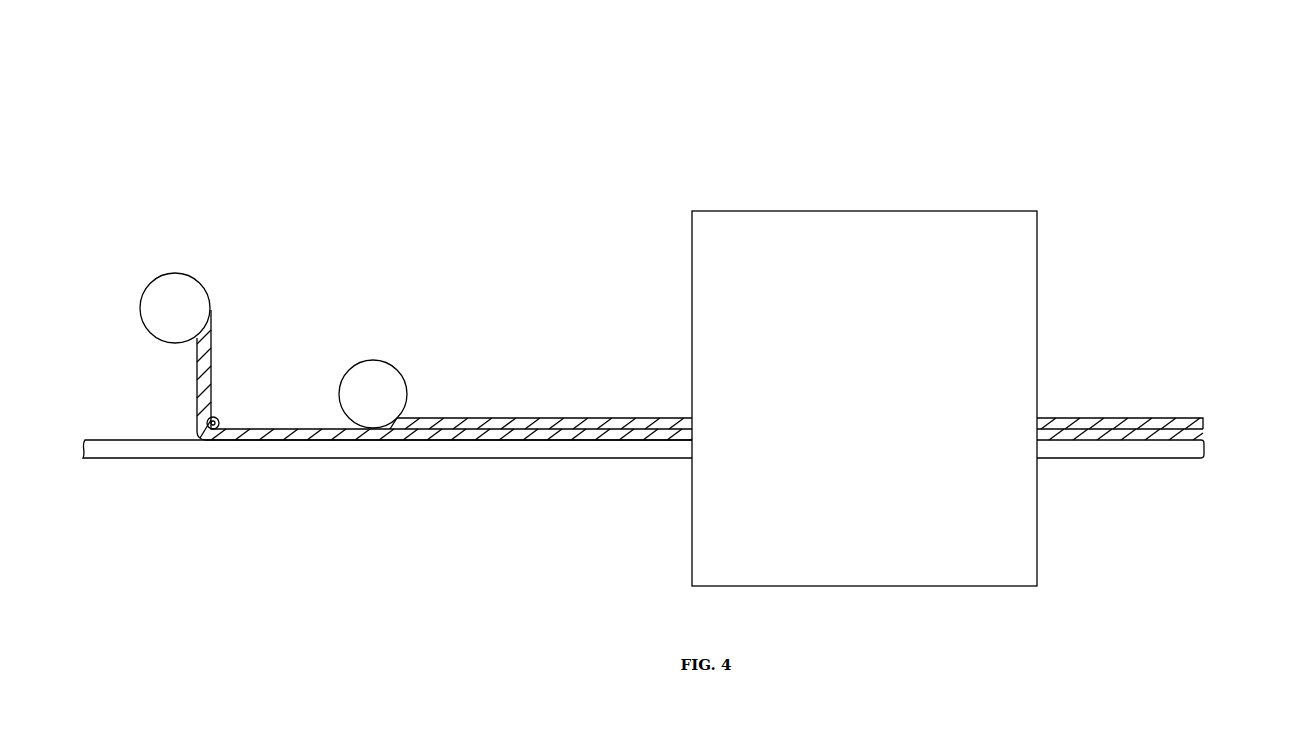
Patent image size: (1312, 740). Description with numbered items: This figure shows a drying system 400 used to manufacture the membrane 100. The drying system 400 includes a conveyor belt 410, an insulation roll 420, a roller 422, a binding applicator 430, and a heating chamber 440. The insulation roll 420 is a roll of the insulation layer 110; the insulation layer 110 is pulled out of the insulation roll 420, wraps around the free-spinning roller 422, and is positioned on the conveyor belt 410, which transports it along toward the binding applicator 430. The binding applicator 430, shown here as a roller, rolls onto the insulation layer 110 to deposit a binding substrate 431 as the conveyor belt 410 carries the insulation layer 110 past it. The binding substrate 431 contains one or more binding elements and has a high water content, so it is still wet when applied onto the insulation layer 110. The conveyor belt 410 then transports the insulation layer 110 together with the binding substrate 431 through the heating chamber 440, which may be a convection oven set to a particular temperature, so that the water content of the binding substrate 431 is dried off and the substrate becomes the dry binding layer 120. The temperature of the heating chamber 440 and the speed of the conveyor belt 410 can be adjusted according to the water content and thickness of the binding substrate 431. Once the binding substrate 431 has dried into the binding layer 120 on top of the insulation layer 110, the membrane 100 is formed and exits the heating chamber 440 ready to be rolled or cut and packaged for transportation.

The drying system 400 is at (522, 122).
The conveyor belt 410 is at (332, 452).
The insulation roll 420 is at (178, 283).
The roller 422 is at (217, 418).
The binding applicator 430 is at (373, 370).
The binding substrate 431 is at (482, 408).
The heating chamber 440 is at (865, 220).
The membrane 100 is at (1172, 410).
The insulation layer 110 is at (272, 418).
The binding layer 120 is at (1212, 418).